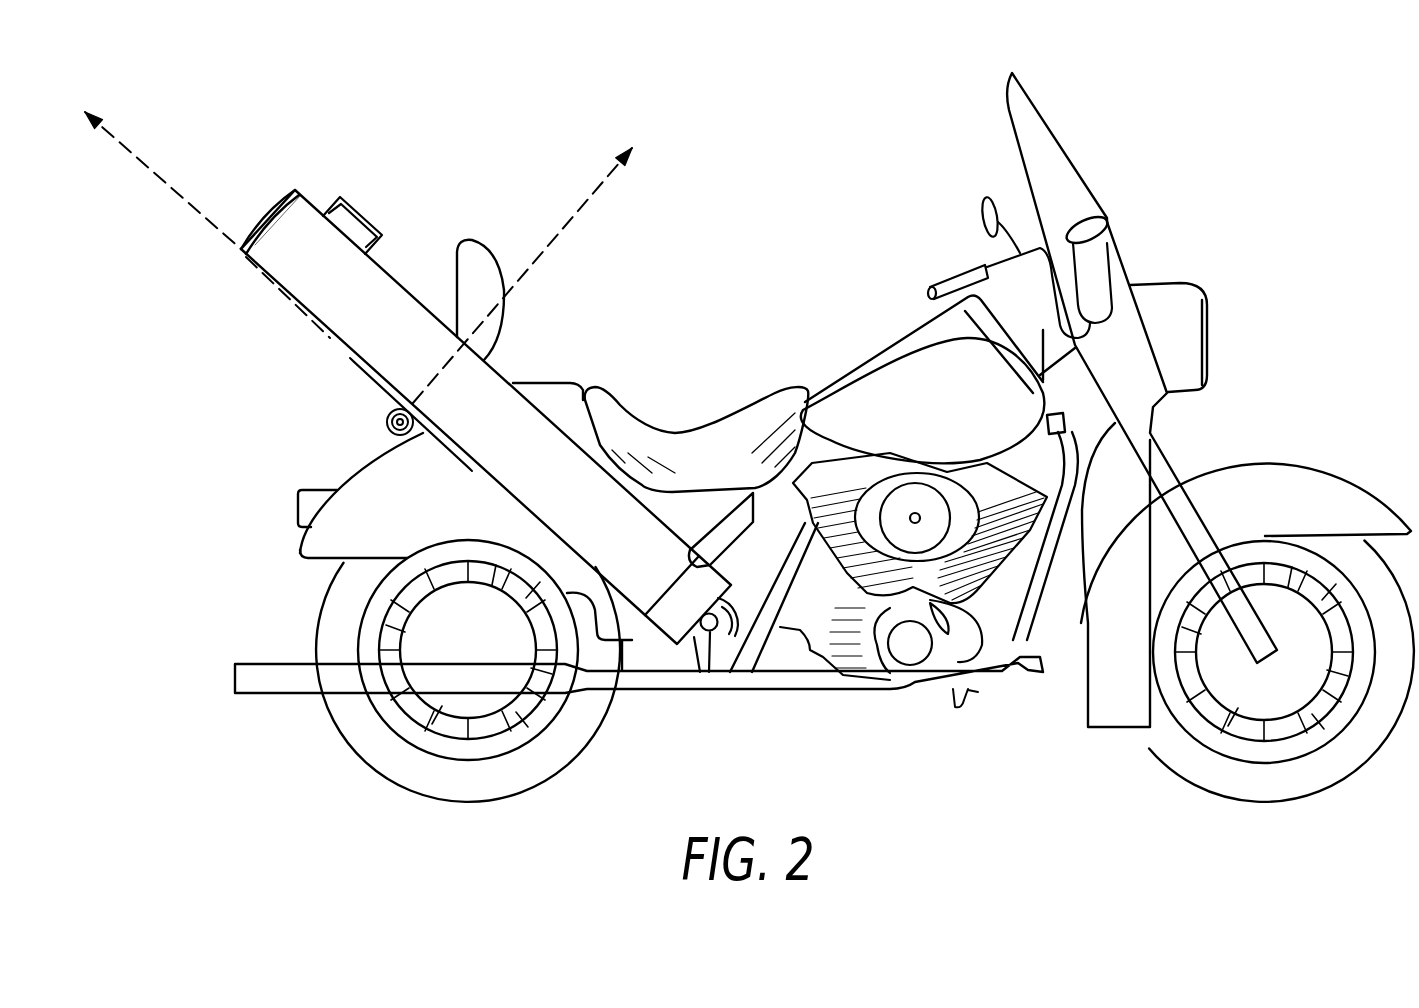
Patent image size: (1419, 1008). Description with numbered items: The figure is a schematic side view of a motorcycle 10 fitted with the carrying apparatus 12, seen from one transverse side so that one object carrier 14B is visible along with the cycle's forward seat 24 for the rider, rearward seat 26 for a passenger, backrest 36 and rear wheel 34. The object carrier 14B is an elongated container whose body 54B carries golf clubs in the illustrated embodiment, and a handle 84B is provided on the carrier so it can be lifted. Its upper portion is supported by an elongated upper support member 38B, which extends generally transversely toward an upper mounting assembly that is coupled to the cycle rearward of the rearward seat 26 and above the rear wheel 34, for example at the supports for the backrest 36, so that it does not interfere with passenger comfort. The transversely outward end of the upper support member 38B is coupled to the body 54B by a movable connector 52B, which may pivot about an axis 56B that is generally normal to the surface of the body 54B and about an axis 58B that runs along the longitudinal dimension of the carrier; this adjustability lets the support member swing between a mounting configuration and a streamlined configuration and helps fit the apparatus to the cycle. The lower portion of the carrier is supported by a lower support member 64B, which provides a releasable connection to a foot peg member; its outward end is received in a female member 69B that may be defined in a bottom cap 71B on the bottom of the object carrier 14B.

The motorcycle 10 is at (1213, 223).
The carrying apparatus 12 is at (293, 145).
The object carrier 14B is at (307, 255).
The forward seat 24 is at (638, 435).
The rearward seat 26 is at (547, 390).
The rear wheel 34 is at (375, 738).
The backrest 36 is at (457, 280).
The upper support member 38B is at (382, 432).
The movable connector 52B is at (380, 400).
The body of object carrier 54B is at (526, 493).
The axis 56B is at (598, 193).
The axis 58B is at (148, 172).
The lower support member 64B is at (757, 640).
The female member 69B is at (715, 637).
The bottom cap 71B is at (690, 640).
The handle 84B is at (370, 205).